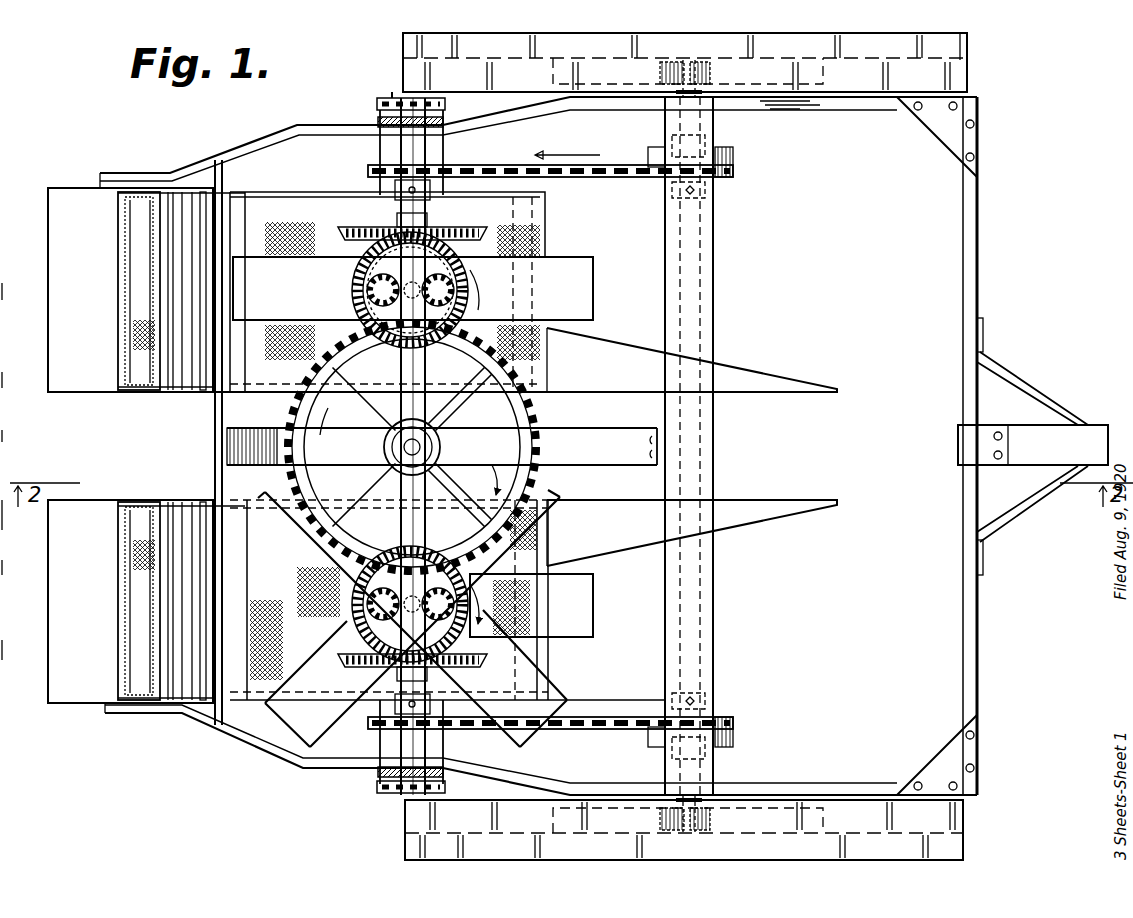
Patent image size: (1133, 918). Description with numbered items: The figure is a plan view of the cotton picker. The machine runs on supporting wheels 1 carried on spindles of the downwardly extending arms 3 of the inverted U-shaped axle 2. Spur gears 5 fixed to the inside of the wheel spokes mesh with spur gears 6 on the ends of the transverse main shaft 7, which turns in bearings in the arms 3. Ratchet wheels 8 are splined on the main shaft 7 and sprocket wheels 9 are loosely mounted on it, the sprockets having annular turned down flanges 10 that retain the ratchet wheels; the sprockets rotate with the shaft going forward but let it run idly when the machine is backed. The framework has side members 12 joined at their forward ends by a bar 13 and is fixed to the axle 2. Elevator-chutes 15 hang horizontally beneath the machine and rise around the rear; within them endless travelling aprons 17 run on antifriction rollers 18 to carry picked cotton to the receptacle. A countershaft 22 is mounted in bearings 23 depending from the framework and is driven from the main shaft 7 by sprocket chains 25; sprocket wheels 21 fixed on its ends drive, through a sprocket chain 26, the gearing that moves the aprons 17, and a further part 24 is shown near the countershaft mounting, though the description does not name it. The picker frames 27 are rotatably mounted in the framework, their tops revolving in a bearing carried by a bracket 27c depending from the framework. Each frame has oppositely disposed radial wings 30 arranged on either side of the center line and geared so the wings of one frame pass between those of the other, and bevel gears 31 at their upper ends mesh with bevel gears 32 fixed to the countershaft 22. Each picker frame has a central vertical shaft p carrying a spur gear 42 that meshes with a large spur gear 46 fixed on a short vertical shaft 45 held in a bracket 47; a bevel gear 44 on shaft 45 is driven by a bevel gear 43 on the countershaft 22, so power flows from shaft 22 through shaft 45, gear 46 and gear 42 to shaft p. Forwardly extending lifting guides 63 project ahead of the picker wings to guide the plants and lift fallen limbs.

The supporting wheels 1 is at (945, 48).
The axle 2 is at (712, 260).
The downwardly extending arms 3 is at (668, 18).
The spur gears 5 is at (806, 805).
The spur gears 6 is at (700, 818).
The transverse main shaft 7 is at (717, 314).
The ratchet wheels 8 is at (693, 144).
The sprocket wheels 9 is at (733, 170).
The annular turned down flanges 10 is at (725, 767).
The side members 12 is at (832, 106).
The bar 13 is at (965, 272).
The elevator-chutes 15 is at (48, 190).
The endless travelling aprons 17 is at (145, 255).
The antifriction rollers 18 is at (543, 207).
The sprocket wheels 21 is at (392, 97).
The countershaft 22 is at (398, 153).
The bearings 23 is at (447, 123).
The bearing bracket 24 is at (368, 172).
The sprocket chains 25 is at (508, 170).
The sprocket chain 26 is at (377, 109).
The picker frames 27 is at (290, 562).
The bracket 27c is at (380, 283).
The radial wings 30 is at (572, 273).
The bevel gears 31 is at (362, 270).
The bevel gears 32 is at (483, 223).
The spur gear 42 is at (432, 272).
The bevel gear 43 is at (374, 416).
The bevel gear 44 is at (490, 445).
The short vertical shaft 45 is at (384, 446).
The large spur gear 46 is at (540, 408).
The bracket 47 is at (633, 440).
The lifting guides 63 is at (780, 495).
The vertical shaft p is at (398, 290).